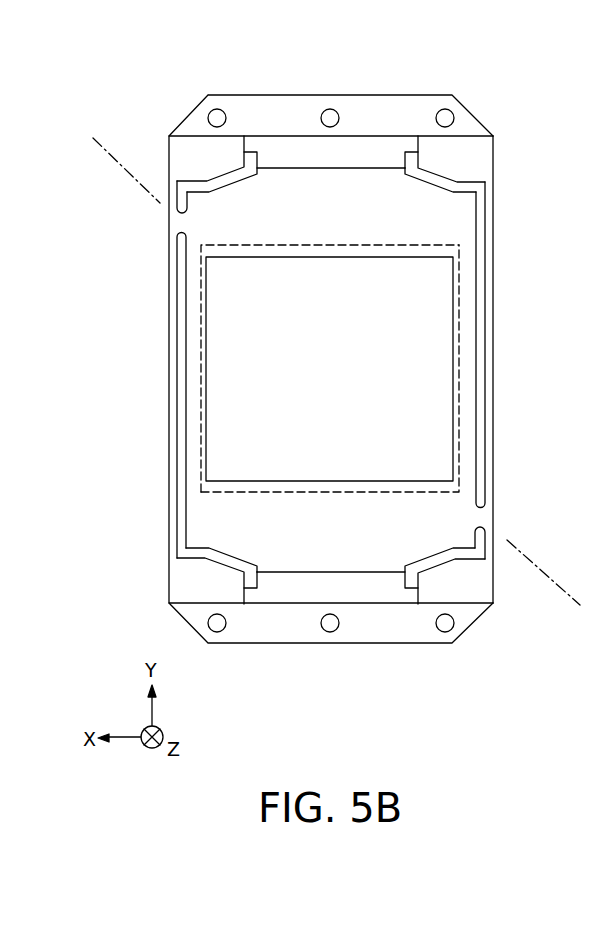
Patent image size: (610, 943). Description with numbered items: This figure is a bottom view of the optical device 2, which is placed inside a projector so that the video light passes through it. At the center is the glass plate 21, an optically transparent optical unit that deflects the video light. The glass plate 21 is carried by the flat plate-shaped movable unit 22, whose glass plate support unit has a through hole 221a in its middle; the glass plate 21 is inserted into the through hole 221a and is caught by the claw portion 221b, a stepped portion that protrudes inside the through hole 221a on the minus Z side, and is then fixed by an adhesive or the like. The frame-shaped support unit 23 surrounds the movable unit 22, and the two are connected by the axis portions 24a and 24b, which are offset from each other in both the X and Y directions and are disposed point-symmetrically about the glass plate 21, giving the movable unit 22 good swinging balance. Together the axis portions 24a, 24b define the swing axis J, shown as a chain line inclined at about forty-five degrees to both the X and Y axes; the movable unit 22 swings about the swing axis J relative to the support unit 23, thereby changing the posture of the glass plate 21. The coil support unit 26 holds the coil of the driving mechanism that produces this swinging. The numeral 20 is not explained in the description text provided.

The optical device 2 is at (190, 71).
The package 20 is at (292, 656).
The glass plate 21 is at (435, 353).
The movable unit 22 is at (452, 232).
The support unit 23 is at (493, 435).
The axis portion 24a is at (182, 220).
The axis portion 24b is at (488, 515).
The coil support unit 26 is at (253, 150).
The through hole 221a is at (203, 385).
The claw portion 221b is at (218, 492).
The swing axis J is at (329, 366).